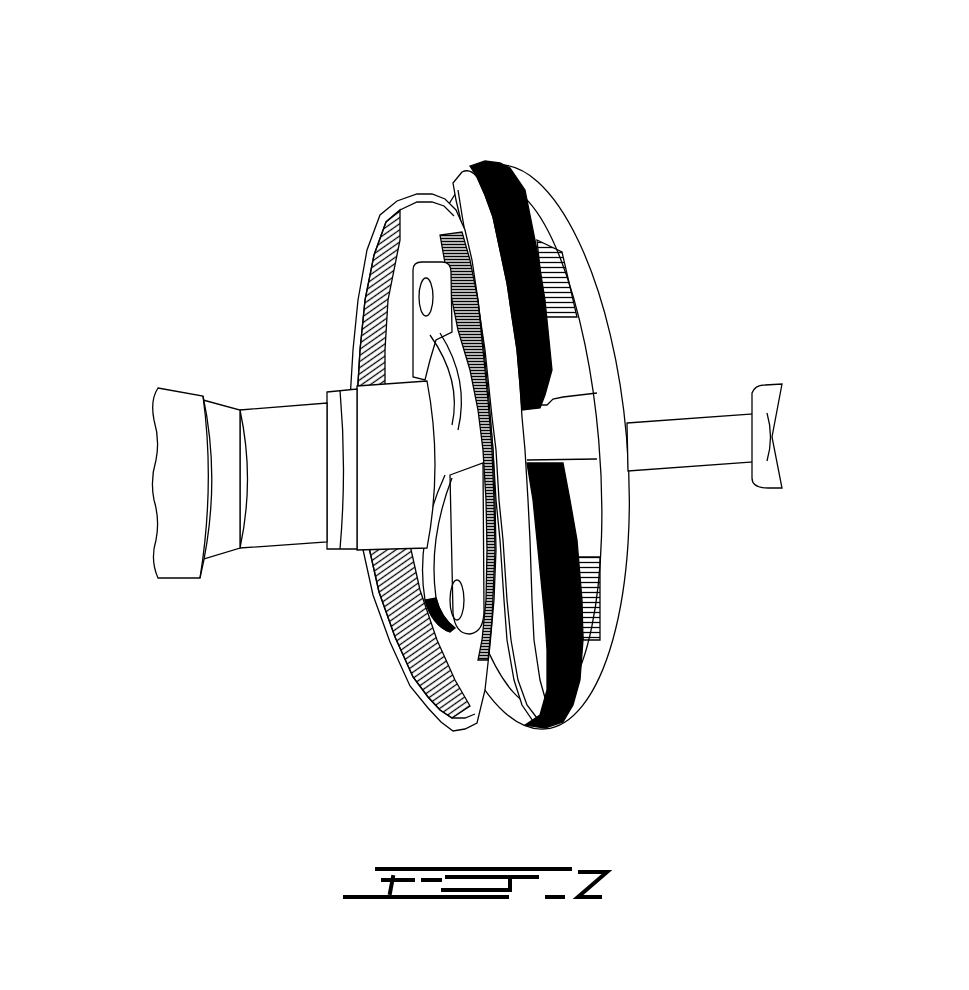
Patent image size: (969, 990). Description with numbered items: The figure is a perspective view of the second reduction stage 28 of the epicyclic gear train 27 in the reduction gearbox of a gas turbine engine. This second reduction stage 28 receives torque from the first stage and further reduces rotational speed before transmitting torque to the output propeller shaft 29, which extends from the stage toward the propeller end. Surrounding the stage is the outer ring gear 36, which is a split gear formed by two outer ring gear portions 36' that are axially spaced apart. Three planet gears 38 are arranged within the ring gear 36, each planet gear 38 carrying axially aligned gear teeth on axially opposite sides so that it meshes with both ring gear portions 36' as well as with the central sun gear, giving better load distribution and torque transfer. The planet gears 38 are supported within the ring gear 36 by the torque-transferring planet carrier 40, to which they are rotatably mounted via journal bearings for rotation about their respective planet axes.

The second reduction stage 28 is at (586, 395).
The epicyclic gear train 27 is at (611, 201).
The outer ring gear 36 is at (413, 377).
The outer ring gear portion 36' is at (443, 386).
The planet gear 38 is at (482, 158).
The planet carrier 40 is at (413, 366).
The propeller shaft 29 is at (268, 430).